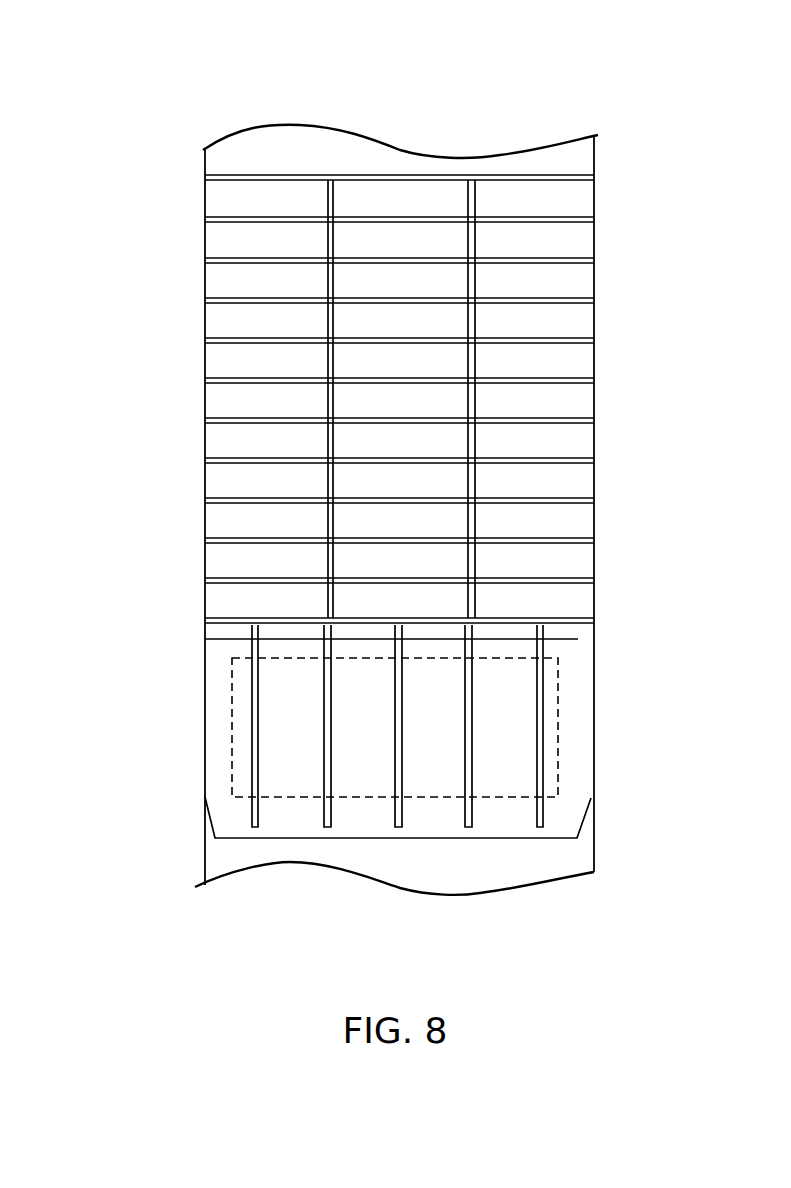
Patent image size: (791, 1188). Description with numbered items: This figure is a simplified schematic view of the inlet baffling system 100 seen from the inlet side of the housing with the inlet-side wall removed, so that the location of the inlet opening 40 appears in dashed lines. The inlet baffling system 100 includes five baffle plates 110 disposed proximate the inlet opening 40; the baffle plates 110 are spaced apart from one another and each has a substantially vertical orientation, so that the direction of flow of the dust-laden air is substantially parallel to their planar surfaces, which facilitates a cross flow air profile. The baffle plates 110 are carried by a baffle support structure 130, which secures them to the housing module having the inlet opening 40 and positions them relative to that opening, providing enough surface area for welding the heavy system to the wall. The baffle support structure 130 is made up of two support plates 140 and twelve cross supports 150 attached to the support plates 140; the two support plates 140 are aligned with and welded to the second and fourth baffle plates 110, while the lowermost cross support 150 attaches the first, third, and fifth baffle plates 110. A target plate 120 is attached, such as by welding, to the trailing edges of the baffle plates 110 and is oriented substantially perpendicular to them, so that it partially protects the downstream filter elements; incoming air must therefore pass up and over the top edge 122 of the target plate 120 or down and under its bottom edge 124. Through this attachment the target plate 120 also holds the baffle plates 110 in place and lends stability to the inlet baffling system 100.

The inlet baffling system 100 is at (658, 92).
The baffle support structure 130 is at (419, 397).
The support plates 140 is at (330, 241).
The cross supports 150 is at (233, 300).
The top edge 122 is at (572, 640).
The target plate 120 is at (386, 793).
The bottom edge 124 is at (557, 840).
The inlet opening 40 is at (230, 727).
The baffle plates 110 is at (255, 767).